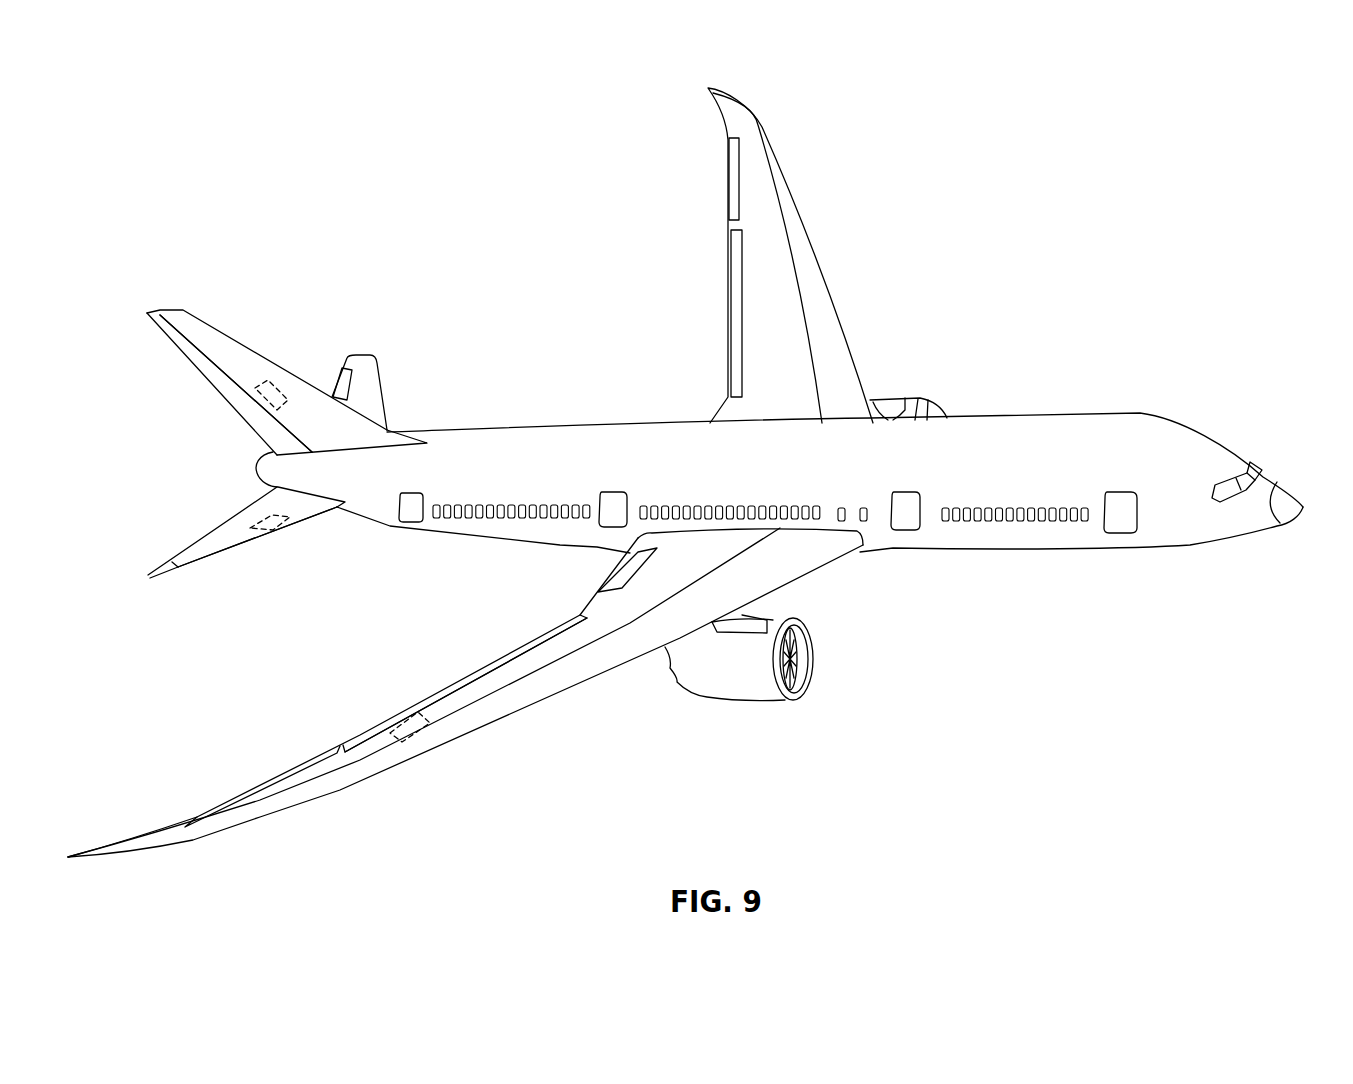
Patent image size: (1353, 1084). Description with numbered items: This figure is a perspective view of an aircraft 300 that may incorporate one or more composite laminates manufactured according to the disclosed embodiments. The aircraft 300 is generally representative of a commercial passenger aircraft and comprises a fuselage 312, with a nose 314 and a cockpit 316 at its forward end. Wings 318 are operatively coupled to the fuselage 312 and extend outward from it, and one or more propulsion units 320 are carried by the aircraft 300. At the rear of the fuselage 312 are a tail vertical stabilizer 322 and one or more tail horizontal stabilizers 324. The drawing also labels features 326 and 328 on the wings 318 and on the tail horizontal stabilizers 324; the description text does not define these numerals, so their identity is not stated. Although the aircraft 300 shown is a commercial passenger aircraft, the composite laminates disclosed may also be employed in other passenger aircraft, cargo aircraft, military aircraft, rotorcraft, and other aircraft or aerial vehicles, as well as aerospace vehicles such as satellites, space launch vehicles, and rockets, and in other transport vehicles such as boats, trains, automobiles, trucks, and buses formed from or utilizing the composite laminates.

The aircraft 300 is at (1048, 205).
The fuselage 312 is at (1012, 430).
The nose 314 is at (1280, 512).
The cockpit 316 is at (1257, 466).
The wings 318 is at (780, 173).
The propulsion units 320 is at (915, 398).
The tail vertical stabilizer 322 is at (220, 343).
The tail horizontal stabilizers 324 is at (370, 393).
The control surface 326 is at (300, 381).
The actuator 328 is at (277, 380).